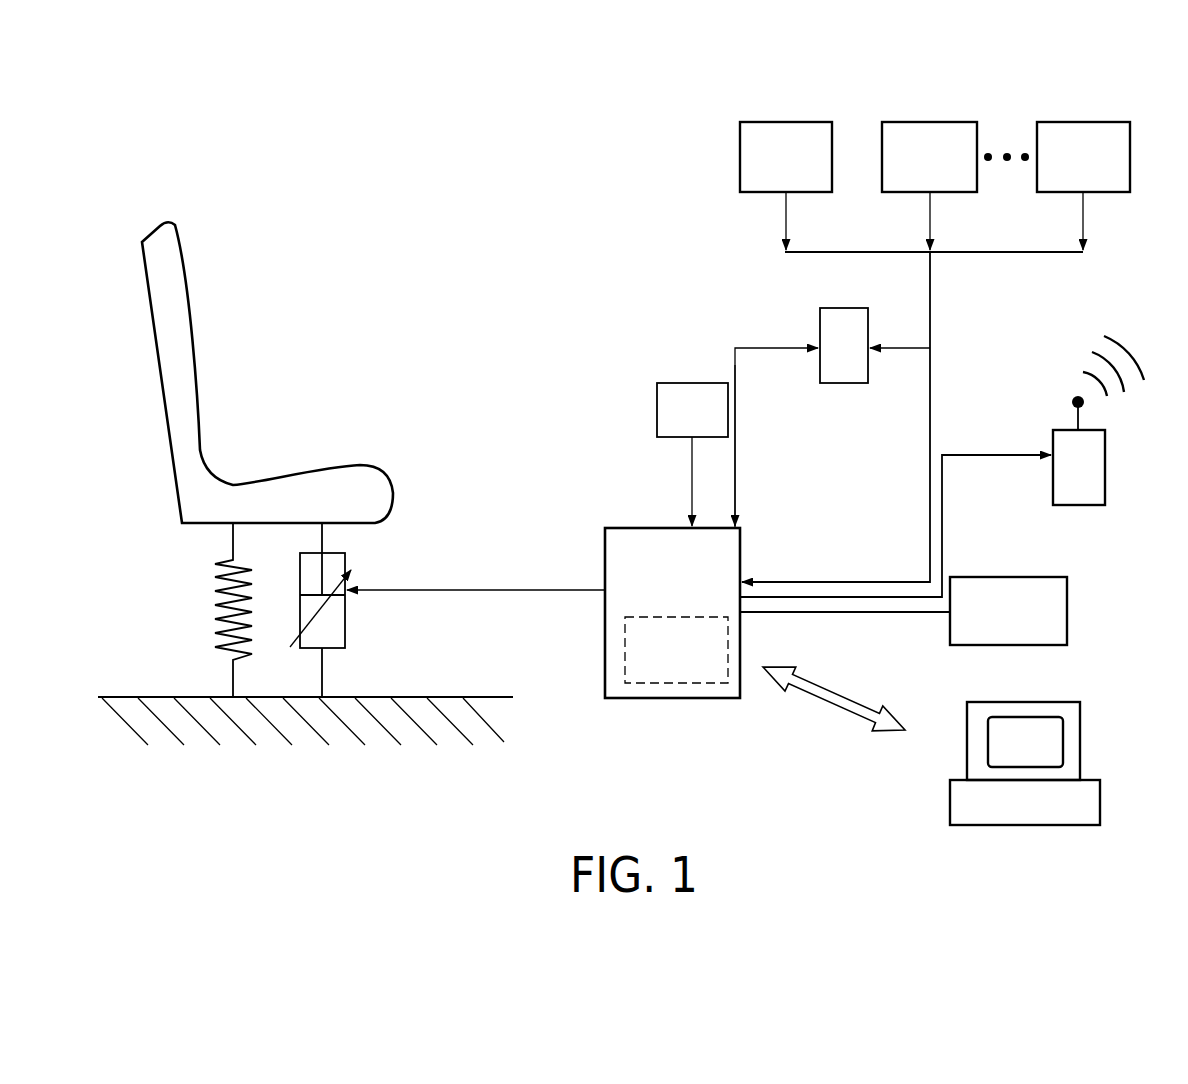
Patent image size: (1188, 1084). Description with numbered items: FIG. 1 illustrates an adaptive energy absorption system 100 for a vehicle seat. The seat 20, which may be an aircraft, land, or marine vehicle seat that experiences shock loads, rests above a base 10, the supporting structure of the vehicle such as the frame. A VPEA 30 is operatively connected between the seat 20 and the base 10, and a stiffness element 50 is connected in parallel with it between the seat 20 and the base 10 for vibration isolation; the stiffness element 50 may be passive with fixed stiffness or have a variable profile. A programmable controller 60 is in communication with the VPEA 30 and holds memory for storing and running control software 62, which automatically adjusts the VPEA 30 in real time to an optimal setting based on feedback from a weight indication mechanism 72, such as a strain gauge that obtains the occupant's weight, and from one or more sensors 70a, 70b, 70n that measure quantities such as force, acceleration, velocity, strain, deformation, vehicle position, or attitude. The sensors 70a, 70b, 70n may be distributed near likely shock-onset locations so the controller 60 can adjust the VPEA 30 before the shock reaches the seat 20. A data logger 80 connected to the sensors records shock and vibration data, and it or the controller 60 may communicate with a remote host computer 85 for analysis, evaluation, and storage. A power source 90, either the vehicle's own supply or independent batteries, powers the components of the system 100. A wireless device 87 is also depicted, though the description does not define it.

The adaptive energy absorption system 100 is at (518, 127).
The seat 20 is at (287, 462).
The stiffness element 50 is at (210, 609).
The VPEA 30 is at (345, 612).
The base 10 is at (492, 721).
The controller 60 is at (701, 611).
The control software 62 is at (676, 650).
The weight indication mechanism 72 is at (692, 454).
The data logger 80 is at (841, 387).
The sensor 70a is at (783, 122).
The sensor 70b is at (936, 122).
The sensor 70n is at (1088, 122).
The wireless transceiver 87 is at (942, 466).
The power source 90 is at (903, 611).
The remote host computer 85 is at (1025, 763).